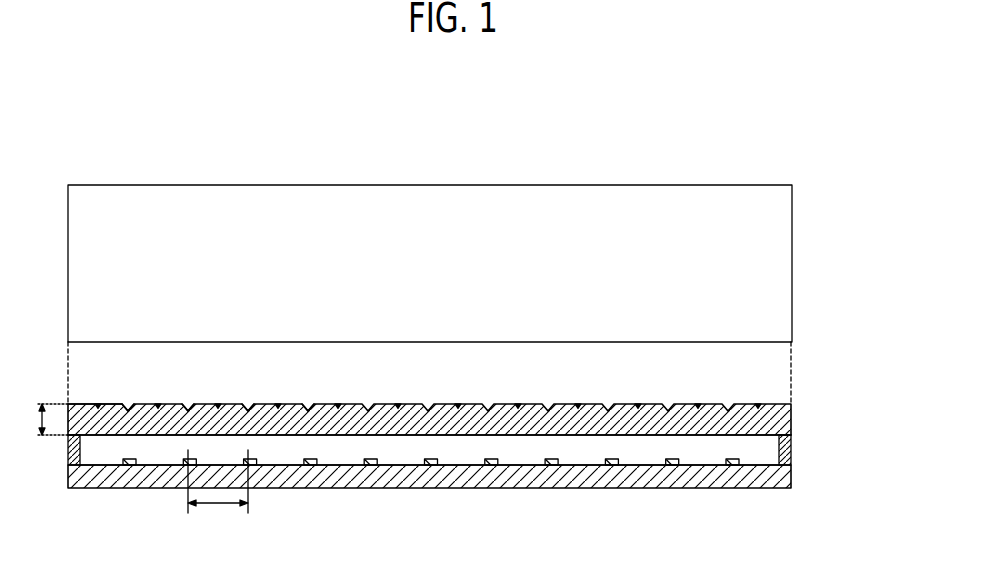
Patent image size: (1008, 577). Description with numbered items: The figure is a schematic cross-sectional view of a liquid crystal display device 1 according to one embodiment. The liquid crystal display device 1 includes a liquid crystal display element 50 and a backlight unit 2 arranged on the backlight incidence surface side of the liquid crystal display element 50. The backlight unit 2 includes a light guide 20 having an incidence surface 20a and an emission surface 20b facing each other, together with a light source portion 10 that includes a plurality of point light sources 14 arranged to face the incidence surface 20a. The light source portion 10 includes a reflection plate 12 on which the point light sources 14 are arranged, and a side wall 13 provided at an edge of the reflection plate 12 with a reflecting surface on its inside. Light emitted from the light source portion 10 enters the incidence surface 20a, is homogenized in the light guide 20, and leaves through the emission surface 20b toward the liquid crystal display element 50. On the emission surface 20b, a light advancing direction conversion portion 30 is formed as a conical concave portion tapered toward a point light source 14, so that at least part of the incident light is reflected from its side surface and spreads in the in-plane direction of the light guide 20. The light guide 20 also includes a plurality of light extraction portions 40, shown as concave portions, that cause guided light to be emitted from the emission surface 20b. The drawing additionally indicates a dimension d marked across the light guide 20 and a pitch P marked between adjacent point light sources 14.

The liquid crystal display device 1 is at (80, 150).
The backlight unit 2 is at (893, 402).
The light source portion 10 is at (852, 437).
The reflection plate 12 is at (790, 476).
The side wall 13 is at (793, 448).
The point light sources 14 is at (672, 467).
The light guide 20 is at (784, 417).
The incidence surface 20a is at (100, 441).
The emission surface 20b is at (110, 402).
The light advancing direction conversion portion 30 is at (249, 404).
The light extraction portions 40 is at (280, 404).
The liquid crystal display element 50 is at (788, 258).
The thickness of optical sheet d is at (41, 421).
The pitch of protrusions P is at (218, 497).